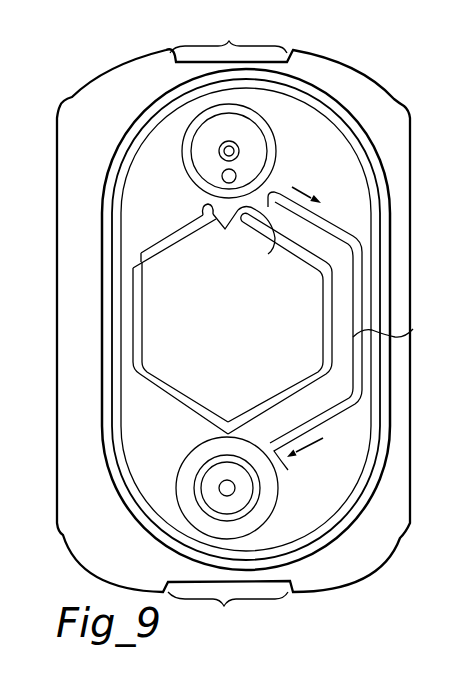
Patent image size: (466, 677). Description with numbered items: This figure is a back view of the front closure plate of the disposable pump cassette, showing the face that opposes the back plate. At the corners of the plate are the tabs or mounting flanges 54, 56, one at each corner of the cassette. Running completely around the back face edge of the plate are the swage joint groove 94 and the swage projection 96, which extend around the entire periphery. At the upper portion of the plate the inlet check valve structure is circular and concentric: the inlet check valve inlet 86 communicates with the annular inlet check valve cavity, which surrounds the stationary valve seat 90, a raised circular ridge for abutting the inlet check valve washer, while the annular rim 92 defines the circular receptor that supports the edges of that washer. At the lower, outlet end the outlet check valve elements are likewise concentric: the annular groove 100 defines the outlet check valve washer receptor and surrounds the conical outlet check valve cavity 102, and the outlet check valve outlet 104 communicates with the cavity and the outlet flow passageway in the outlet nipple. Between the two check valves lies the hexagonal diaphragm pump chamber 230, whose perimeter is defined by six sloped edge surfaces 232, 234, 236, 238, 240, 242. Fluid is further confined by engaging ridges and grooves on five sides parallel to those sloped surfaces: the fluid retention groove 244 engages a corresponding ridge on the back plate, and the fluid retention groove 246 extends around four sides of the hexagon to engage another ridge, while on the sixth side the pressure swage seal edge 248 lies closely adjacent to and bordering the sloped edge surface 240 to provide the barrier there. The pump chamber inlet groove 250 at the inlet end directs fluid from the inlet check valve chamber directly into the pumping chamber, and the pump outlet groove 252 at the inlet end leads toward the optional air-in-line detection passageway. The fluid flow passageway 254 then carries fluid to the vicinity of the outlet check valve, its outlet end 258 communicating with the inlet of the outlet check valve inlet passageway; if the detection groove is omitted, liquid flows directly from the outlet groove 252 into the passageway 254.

The mounting flange 54 is at (228, 40).
The mounting flange 56 is at (228, 607).
The inlet check valve inlet 86 is at (237, 173).
The valve seat 90 is at (258, 145).
The annular rim 92 is at (263, 119).
The swage joint groove 94 is at (378, 234).
The swage projection 96 is at (392, 195).
The annular groove 100 is at (277, 495).
The outlet check valve cavity 102 is at (249, 507).
The outlet check valve outlet 104 is at (221, 483).
The hexagonal diaphragm pump chamber 230 is at (231, 300).
The sloped edge surface 232 is at (303, 262).
The sloped edge surface 234 is at (320, 345).
The sloped edge surface 236 is at (283, 393).
The sloped edge surface 238 is at (189, 398).
The sloped edge surface 240 is at (141, 348).
The sloped edge surface 242 is at (160, 261).
The fluid retention groove 244 is at (185, 232).
The fluid retention groove 246 is at (336, 309).
The pressure swage seal edge 248 is at (127, 309).
The pump chamber inlet groove 250 is at (197, 198).
The pump outlet groove 252 is at (268, 254).
The fluid flow passageway 254 is at (413, 329).
The outlet end of fluid outflow passageway 258 is at (315, 335).